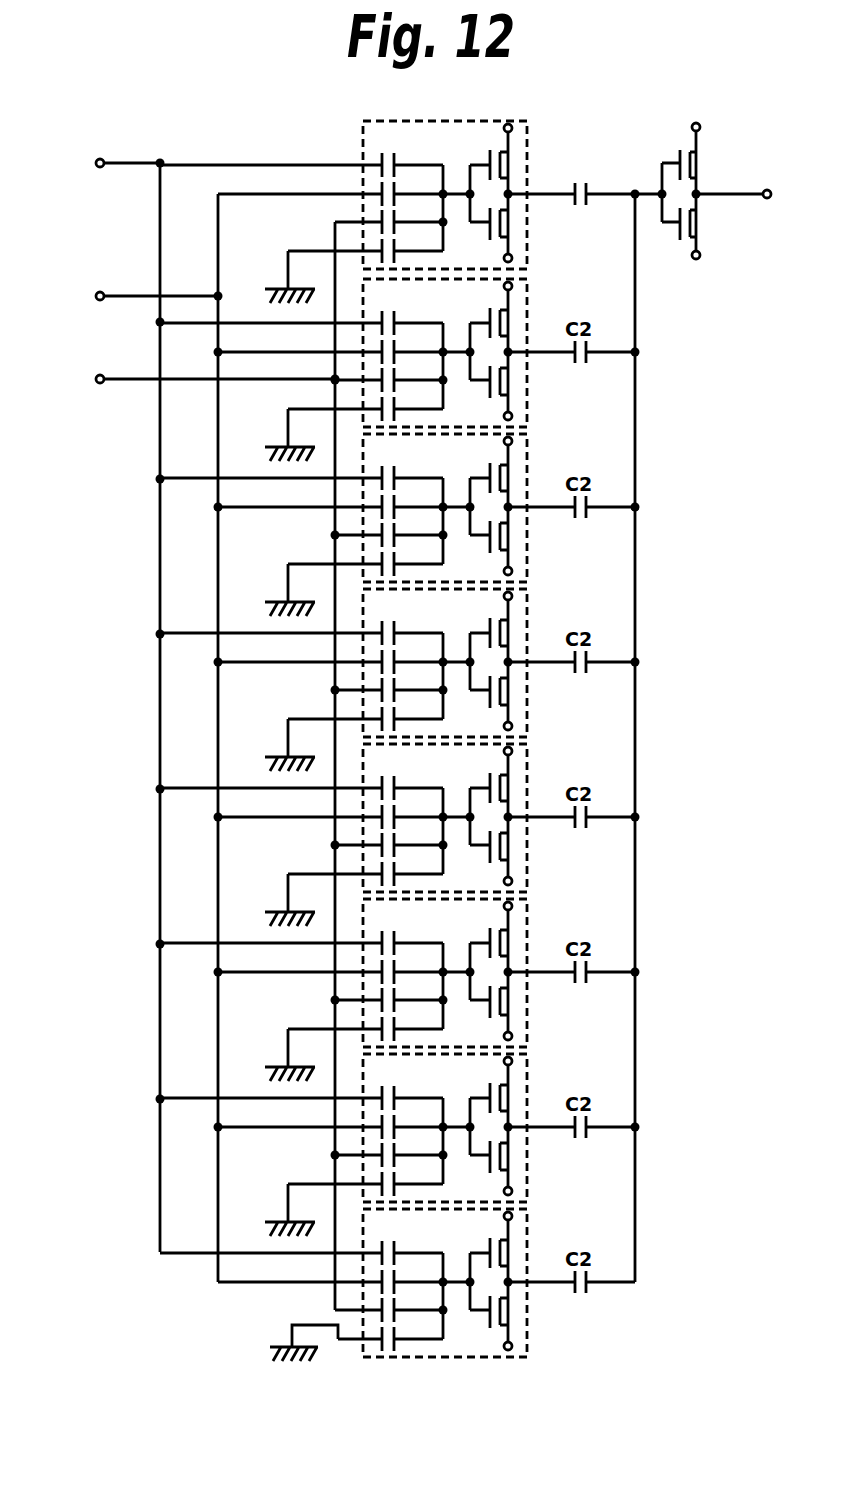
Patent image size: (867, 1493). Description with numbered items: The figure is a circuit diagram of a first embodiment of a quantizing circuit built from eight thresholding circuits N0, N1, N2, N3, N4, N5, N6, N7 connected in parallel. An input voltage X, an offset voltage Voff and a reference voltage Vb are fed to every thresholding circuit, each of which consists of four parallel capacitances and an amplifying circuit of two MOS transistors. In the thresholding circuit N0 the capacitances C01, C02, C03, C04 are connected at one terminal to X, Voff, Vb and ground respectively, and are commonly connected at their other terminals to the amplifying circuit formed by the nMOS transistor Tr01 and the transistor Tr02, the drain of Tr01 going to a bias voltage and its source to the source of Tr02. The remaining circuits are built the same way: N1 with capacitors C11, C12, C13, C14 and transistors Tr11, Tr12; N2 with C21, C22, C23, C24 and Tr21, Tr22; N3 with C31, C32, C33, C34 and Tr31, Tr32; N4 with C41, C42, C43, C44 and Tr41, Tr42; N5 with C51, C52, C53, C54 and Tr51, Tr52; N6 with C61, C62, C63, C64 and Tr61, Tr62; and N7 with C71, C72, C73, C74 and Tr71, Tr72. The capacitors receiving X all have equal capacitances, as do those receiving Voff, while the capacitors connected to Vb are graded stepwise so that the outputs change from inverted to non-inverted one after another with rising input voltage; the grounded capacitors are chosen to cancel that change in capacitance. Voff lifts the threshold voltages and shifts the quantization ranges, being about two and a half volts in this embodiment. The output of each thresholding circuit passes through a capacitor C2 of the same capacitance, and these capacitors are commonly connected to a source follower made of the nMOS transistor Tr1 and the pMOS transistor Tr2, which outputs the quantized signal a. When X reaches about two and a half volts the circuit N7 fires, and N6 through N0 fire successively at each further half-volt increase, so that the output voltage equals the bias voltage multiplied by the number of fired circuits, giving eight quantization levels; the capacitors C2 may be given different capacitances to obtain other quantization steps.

The input voltage X is at (117, 164).
The offset voltage Voff is at (133, 296).
The reference voltage Vb is at (199, 380).
The quantized signal a is at (744, 195).
The nMOS transistor Tr1 is at (699, 158).
The pMOS transistor Tr2 is at (699, 226).
The capacitor C2 is at (600, 182).
The thresholding circuit N0 is at (557, 1305).
The thresholding circuit N1 is at (557, 1150).
The thresholding circuit N2 is at (557, 995).
The thresholding circuit N3 is at (557, 840).
The thresholding circuit N4 is at (557, 685).
The thresholding circuit N5 is at (557, 530).
The thresholding circuit N6 is at (557, 375).
The thresholding circuit N7 is at (527, 215).
The capacitance C01 is at (301, 1249).
The capacitance C02 is at (330, 1278).
The capacitance C03 is at (389, 1306).
The capacitance C04 is at (390, 1335).
The capacitor C11 is at (301, 1094).
The capacitor C12 is at (330, 1123).
The capacitor C13 is at (389, 1151).
The capacitor C14 is at (365, 1180).
The capacitor C21 is at (301, 939).
The capacitor C22 is at (330, 968).
The capacitor C23 is at (389, 996).
The capacitor C24 is at (365, 1025).
The capacitor C31 is at (301, 784).
The capacitor C32 is at (330, 813).
The capacitor C33 is at (389, 841).
The capacitor C34 is at (365, 870).
The capacitor C41 is at (301, 629).
The capacitor C42 is at (330, 658).
The capacitor C43 is at (389, 686).
The capacitor C44 is at (365, 715).
The capacitor C51 is at (301, 474).
The capacitor C52 is at (330, 503).
The capacitor C53 is at (389, 531).
The capacitor C54 is at (365, 560).
The capacitor C61 is at (301, 319).
The capacitor C62 is at (330, 348).
The capacitor C63 is at (389, 376).
The capacitor C64 is at (365, 405).
The capacitor C71 is at (301, 161).
The capacitor C72 is at (330, 190).
The capacitor C73 is at (389, 218).
The capacitor C74 is at (365, 247).
The nMOS transistor Tr01 is at (482, 1247).
The transistor Tr02 is at (481, 1316).
The MOS transistor Tr11 is at (482, 1092).
The MOS transistor Tr12 is at (481, 1161).
The MOS transistor Tr21 is at (482, 937).
The MOS transistor Tr22 is at (481, 1006).
The MOS transistor Tr31 is at (482, 782).
The MOS transistor Tr32 is at (481, 851).
The MOS transistor Tr41 is at (482, 627).
The MOS transistor Tr42 is at (481, 696).
The MOS transistor Tr51 is at (482, 472).
The MOS transistor Tr52 is at (481, 541).
The MOS transistor Tr61 is at (482, 317).
The MOS transistor Tr62 is at (481, 386).
The MOS transistor Tr71 is at (482, 159).
The MOS transistor Tr72 is at (481, 228).